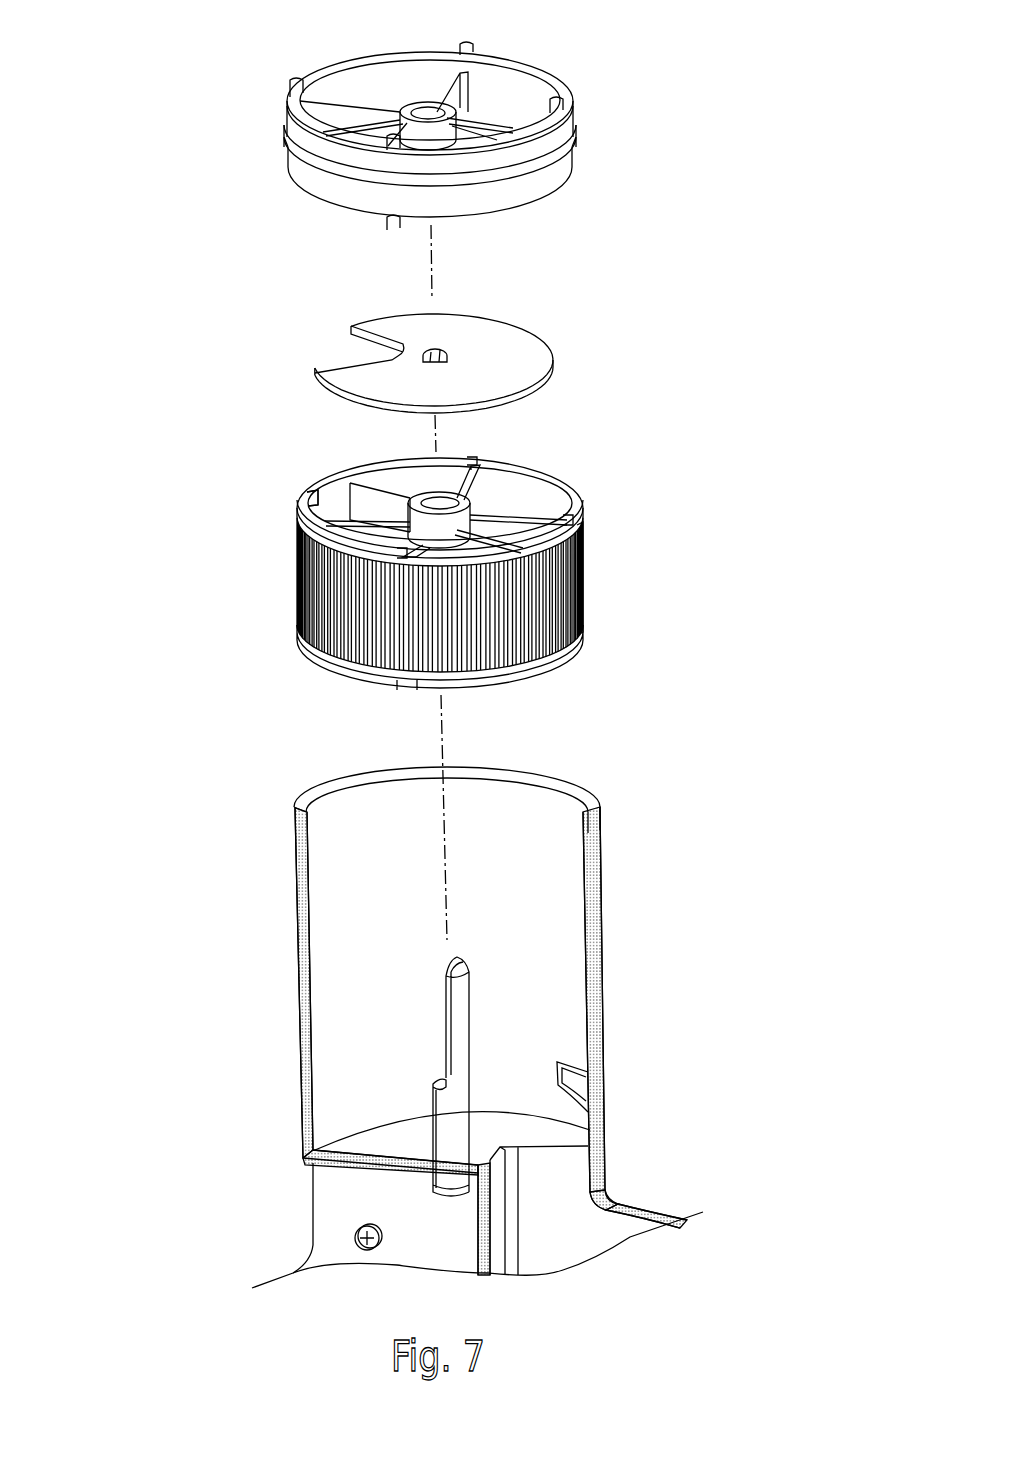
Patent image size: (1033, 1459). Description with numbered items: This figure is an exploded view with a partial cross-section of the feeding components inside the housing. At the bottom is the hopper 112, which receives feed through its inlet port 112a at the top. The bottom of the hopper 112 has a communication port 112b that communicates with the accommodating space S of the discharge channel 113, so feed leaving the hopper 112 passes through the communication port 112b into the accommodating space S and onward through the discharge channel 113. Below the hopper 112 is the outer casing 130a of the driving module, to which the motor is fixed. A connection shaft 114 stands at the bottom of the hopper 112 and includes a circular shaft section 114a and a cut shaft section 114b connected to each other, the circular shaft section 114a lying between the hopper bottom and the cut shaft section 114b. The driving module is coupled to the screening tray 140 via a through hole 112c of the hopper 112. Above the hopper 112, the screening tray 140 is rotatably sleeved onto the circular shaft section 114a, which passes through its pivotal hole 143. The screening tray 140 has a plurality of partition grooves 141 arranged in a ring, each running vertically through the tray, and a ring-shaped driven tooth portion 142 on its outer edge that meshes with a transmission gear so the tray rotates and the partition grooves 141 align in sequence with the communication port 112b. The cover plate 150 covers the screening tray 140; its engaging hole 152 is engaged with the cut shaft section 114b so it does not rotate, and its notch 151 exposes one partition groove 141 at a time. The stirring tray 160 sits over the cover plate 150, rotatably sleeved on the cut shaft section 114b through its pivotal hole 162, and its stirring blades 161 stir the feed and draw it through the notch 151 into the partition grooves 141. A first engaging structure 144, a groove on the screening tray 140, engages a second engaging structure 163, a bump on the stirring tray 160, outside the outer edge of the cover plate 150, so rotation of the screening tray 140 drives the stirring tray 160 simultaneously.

The stirring tray 160 is at (430, 108).
The stirring blades 161 is at (468, 83).
The pivotal hole 162 is at (428, 126).
The second engaging structure 163 is at (568, 180).
The cover plate 150 is at (553, 346).
The notch 151 is at (335, 346).
The engaging hole 152 is at (455, 343).
The screening tray 140 is at (575, 497).
The partition grooves 141 is at (335, 509).
The driven tooth portion 142 is at (297, 577).
The pivotal hole 143 is at (426, 502).
The first engaging structure 144 is at (584, 528).
The hopper 112 is at (297, 930).
The inlet port 112a is at (548, 800).
The communication port 112b is at (557, 1143).
The through hole 112c is at (590, 1056).
The connection shaft 114 is at (215, 1040).
The circular shaft section 114a is at (433, 1094).
The cut shaft section 114b is at (447, 1053).
The outer casing 130a is at (313, 1205).
The discharge channel 113 is at (652, 1204).
The accommodating space S is at (621, 1239).